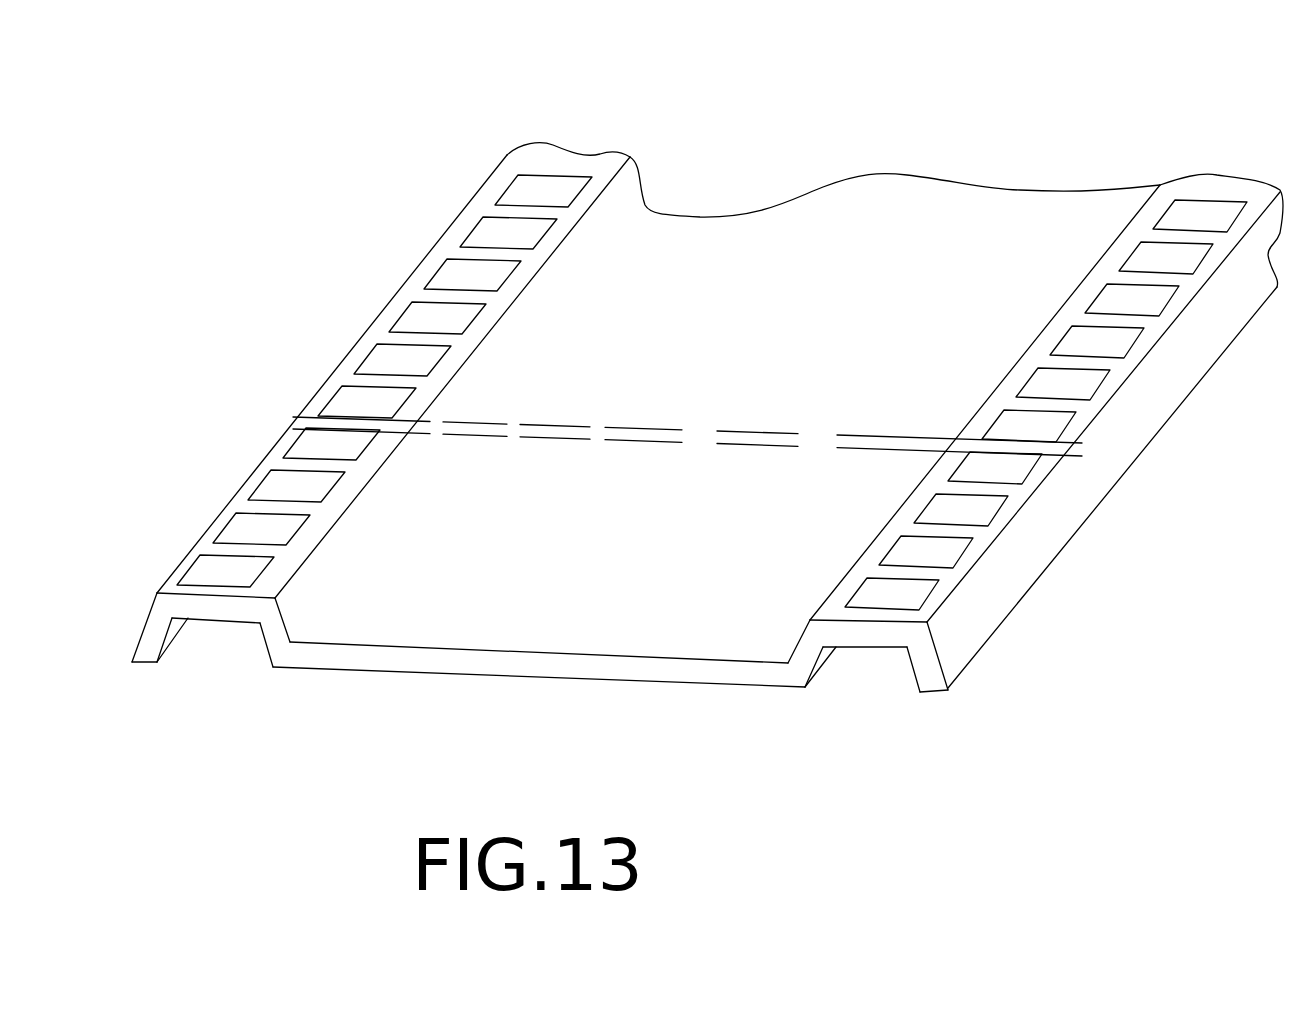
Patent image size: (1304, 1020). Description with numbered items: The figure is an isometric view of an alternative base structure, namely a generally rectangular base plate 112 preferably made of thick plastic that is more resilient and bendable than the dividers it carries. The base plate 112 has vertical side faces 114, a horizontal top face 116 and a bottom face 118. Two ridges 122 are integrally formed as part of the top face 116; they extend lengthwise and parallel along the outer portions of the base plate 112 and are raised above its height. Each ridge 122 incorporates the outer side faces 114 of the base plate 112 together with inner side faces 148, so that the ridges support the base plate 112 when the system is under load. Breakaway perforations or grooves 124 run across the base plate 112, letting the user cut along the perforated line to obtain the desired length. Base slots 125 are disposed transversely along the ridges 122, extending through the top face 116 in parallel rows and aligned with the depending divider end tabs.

The base plate 112 is at (917, 265).
The vertical side faces 114 is at (142, 634).
The horizontal top face 116 is at (600, 655).
The bottom face 118 is at (360, 677).
The ridges 122 is at (197, 613).
The breakaway perforations 124 is at (797, 433).
The base slots 125 is at (408, 357).
The inner side faces 148 is at (613, 197).